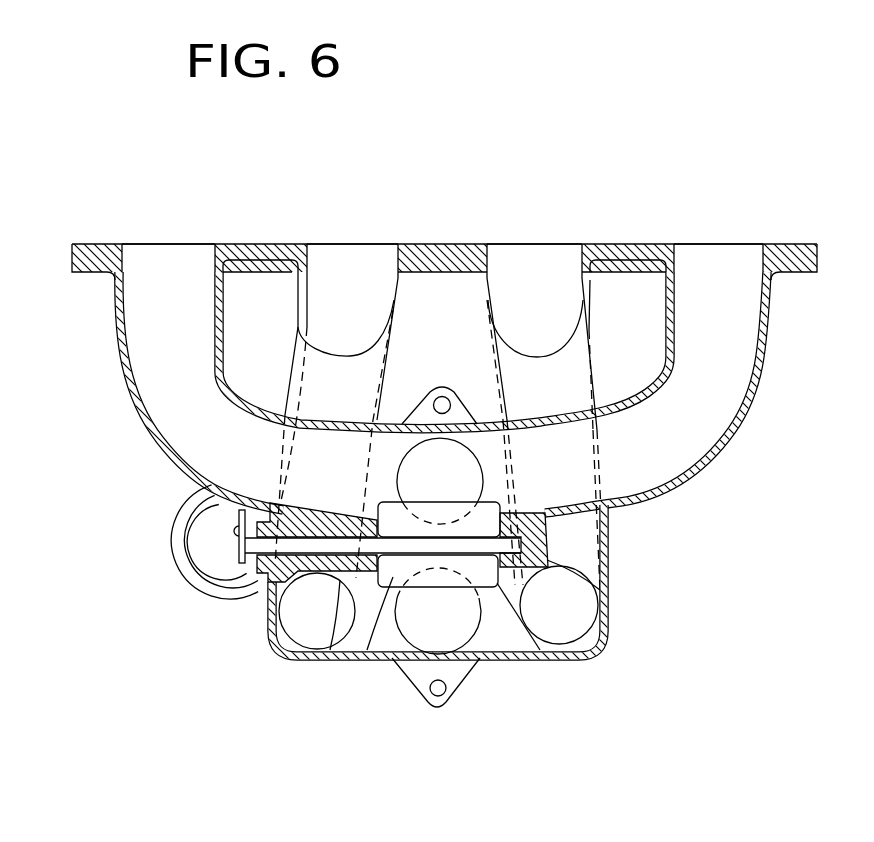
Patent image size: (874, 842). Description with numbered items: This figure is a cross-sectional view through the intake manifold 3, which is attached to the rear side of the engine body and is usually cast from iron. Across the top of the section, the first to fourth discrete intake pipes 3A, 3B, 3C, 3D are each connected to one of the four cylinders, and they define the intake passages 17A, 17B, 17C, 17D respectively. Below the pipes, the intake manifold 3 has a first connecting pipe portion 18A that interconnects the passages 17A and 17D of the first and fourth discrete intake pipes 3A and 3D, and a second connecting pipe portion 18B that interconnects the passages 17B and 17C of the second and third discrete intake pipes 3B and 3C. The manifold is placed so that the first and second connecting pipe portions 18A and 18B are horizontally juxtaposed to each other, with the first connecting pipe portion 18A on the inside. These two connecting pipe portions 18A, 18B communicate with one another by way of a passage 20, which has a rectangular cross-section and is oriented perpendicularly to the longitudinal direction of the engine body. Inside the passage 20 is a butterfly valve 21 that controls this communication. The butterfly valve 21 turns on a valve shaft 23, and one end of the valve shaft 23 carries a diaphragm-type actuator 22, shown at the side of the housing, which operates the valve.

The intake manifold 3 is at (602, 237).
The first discrete intake pipe 3A is at (117, 353).
The second discrete intake pipe 3B is at (300, 370).
The third discrete intake pipe 3C is at (592, 372).
The fourth discrete intake pipe 3D is at (767, 357).
The passage 17A is at (160, 270).
The passage 17B is at (343, 270).
The passage 17C is at (527, 270).
The passage 17D is at (715, 270).
The first connecting pipe portion 18A is at (325, 660).
The second connecting pipe portion 18B is at (483, 623).
The passage 20 is at (527, 627).
The butterfly valve 21 is at (383, 662).
The actuator 22 is at (190, 567).
The valve shaft 23 is at (272, 578).